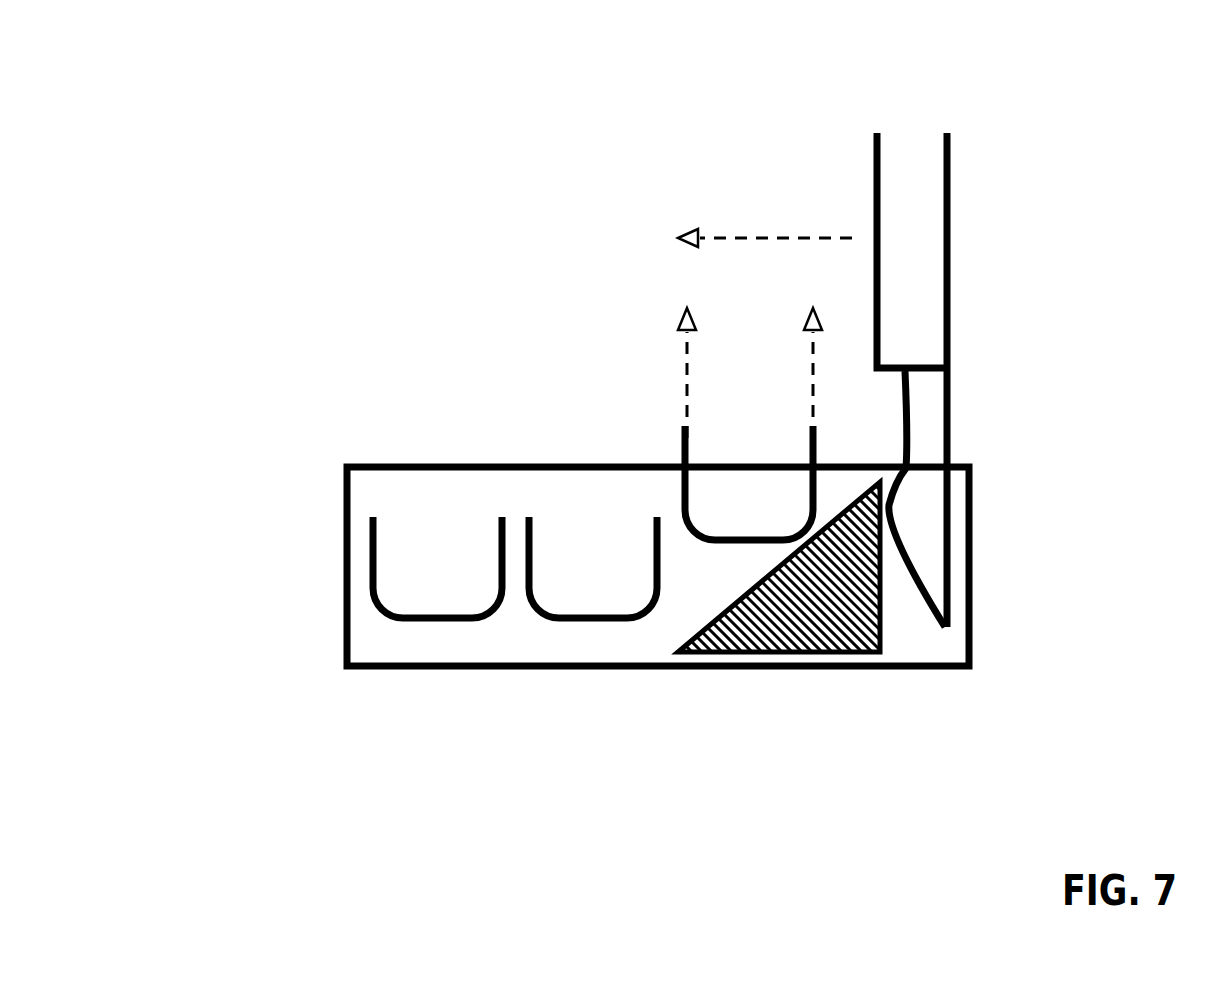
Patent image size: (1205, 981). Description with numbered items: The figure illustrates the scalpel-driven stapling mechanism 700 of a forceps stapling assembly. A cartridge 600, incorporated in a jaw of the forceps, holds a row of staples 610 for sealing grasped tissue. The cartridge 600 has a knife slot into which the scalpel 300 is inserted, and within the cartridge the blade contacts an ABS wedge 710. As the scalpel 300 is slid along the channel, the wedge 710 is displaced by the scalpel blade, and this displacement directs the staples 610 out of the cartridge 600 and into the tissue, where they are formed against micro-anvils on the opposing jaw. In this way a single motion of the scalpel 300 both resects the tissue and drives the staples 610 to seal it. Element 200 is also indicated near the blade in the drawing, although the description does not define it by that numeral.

The scalpel-driven stapling mechanism 700 is at (670, 423).
The cartridge 600 is at (342, 543).
The staples 610 is at (438, 622).
The ABS wedge 710 is at (747, 650).
The scalpel 300 is at (950, 201).
The blade 200 is at (918, 660).